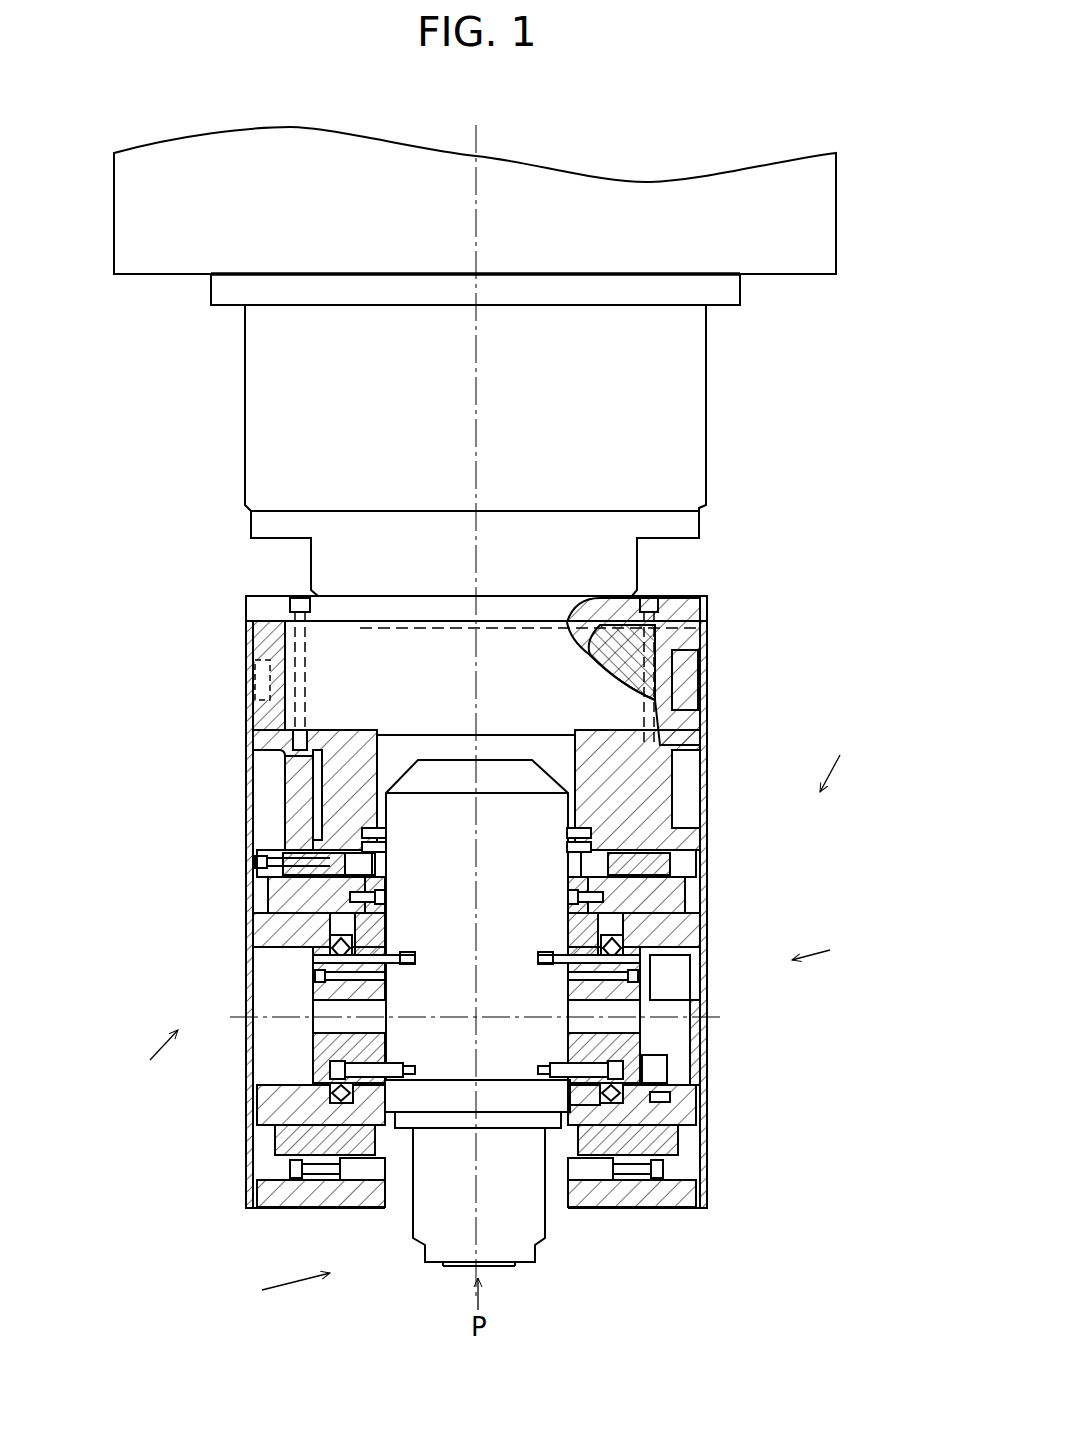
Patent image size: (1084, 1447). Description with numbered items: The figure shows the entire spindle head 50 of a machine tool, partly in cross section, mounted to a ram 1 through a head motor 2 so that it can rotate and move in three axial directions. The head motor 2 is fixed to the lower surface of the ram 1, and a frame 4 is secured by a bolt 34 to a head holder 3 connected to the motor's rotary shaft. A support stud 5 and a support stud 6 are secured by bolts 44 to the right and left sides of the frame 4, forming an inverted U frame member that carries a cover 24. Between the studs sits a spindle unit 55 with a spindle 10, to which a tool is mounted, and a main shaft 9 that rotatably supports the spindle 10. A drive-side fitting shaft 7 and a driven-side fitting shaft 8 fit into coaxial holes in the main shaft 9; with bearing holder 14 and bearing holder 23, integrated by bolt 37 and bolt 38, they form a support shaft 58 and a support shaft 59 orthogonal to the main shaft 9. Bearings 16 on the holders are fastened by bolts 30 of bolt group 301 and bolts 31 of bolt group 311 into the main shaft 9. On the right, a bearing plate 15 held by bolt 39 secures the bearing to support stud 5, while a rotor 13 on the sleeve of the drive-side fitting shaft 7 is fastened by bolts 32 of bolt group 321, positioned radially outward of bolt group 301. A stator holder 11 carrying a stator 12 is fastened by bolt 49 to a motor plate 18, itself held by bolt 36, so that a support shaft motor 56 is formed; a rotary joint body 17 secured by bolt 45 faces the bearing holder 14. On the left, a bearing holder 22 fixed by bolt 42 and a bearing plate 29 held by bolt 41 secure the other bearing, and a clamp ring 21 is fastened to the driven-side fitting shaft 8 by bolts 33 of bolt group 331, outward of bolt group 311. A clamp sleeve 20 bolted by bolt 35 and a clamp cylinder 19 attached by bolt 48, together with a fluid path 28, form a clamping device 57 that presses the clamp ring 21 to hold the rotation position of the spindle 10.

The ram 1 is at (475, 209).
The head motor 2 is at (516, 450).
The head holder 3 is at (509, 649).
The frame 4 is at (680, 656).
The support stud 5 is at (691, 774).
The support stud 6 is at (277, 775).
The drive-side fitting shaft 7 is at (702, 933).
The driven-side fitting shaft 8 is at (415, 921).
The main shaft 9 is at (455, 1180).
The spindle 10 is at (446, 1220).
The stator holder 11 is at (739, 797).
The stator 12 is at (693, 840).
The rotor 13 is at (687, 884).
The bearing holder 14 is at (681, 999).
The bearing plate 15 is at (726, 1121).
The bearings 16 is at (497, 1180).
The rotary joint body 17 is at (674, 1105).
The motor plate 18 is at (476, 1219).
The clamp cylinder 19 is at (259, 842).
The clamp sleeve 20 is at (232, 803).
The clamp ring 21 is at (275, 1125).
The bearing holder 22 is at (237, 937).
The bearing holder 23 is at (284, 999).
The cover 24 is at (489, 1109).
The fluid path 28 is at (259, 804).
The bearing plate 29 is at (266, 901).
The bolts 30 is at (571, 940).
The bolts 31 is at (386, 940).
The bolts 32 is at (553, 880).
The bolts 33 is at (402, 880).
The bolt 34 is at (696, 638).
The bolt 35 is at (414, 817).
The bolt 36 is at (547, 817).
The bolt 37 is at (570, 987).
The bolt 38 is at (387, 987).
The bolt 39 is at (553, 1065).
The bolt 41 is at (399, 1064).
The bolt 42 is at (242, 863).
The bolts 44 is at (738, 680).
The bolt 45 is at (735, 1126).
The bolt 48 is at (414, 841).
The bolt 49 is at (547, 841).
The spindle head 50 is at (547, 872).
The spindle unit 55 is at (278, 1291).
The support shaft motor 56 is at (846, 756).
The clamping device 57 is at (216, 664).
The support shaft 58 is at (826, 944).
The support shaft 59 is at (150, 1061).
The bolt group 301 is at (530, 952).
The bolt group 311 is at (439, 952).
The bolt group 321 is at (537, 903).
The bolt group 331 is at (426, 903).